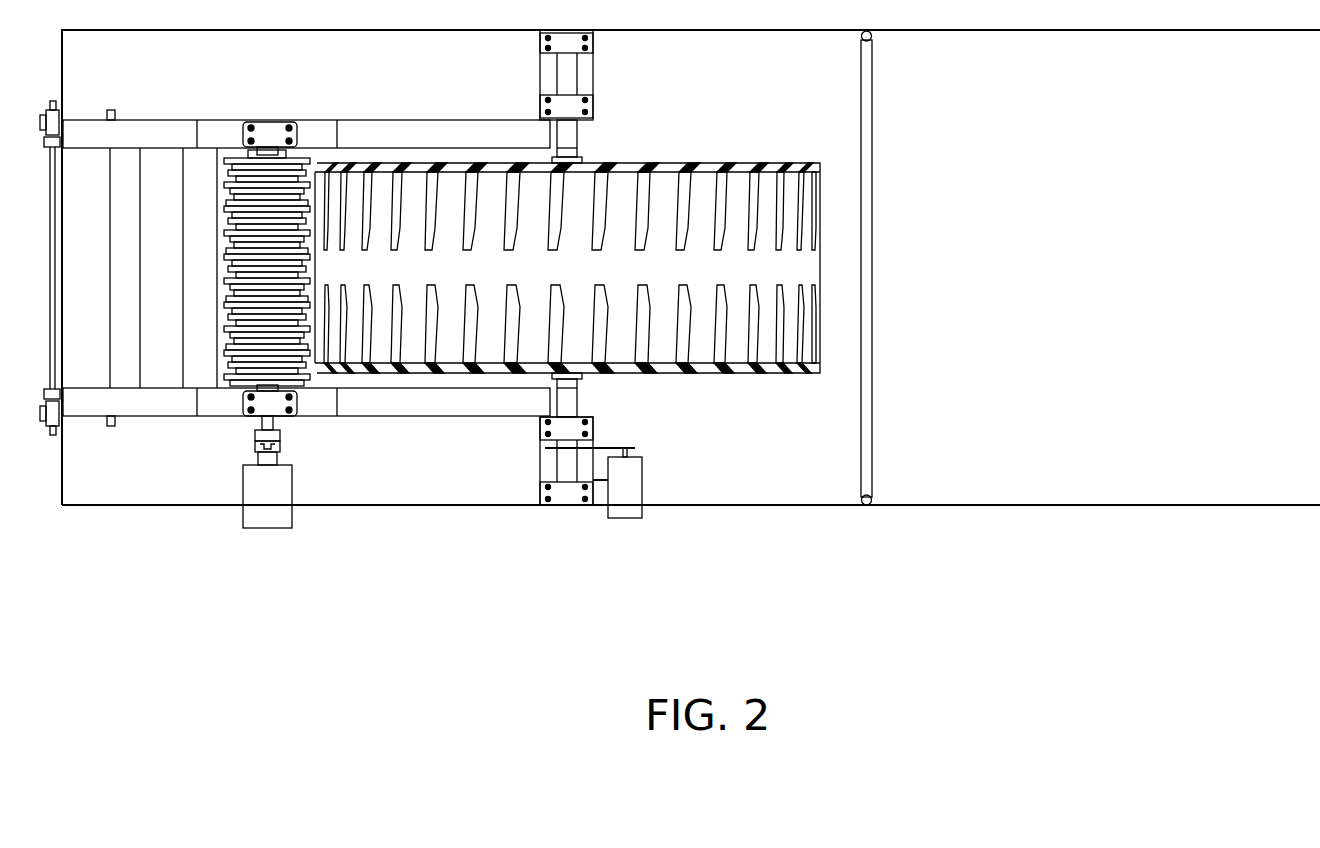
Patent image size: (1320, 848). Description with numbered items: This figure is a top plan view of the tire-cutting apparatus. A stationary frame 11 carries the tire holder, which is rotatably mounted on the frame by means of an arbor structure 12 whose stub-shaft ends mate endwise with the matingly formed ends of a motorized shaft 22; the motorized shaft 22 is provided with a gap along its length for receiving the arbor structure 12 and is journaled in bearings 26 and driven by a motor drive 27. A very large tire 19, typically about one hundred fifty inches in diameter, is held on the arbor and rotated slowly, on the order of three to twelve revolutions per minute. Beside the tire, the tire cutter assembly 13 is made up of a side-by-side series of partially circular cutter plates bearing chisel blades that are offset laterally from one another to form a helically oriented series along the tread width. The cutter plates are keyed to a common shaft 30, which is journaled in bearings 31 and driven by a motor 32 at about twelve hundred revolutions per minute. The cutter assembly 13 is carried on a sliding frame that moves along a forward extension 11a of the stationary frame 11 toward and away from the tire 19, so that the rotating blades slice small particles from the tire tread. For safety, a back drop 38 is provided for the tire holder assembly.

The stationary frame 11 is at (787, 497).
The forward extension of stationary frame 11a is at (363, 412).
The arbor structure 12 is at (580, 158).
The tire cutter assembly 13 is at (232, 265).
The tire 19 is at (805, 268).
The motorized shaft 22 is at (578, 130).
The bearings 26 is at (593, 110).
The motor drive 27 is at (640, 475).
The shaft 30 is at (276, 425).
The bearings 31 is at (267, 123).
The motor 32 is at (275, 522).
The back drop 38 is at (865, 203).